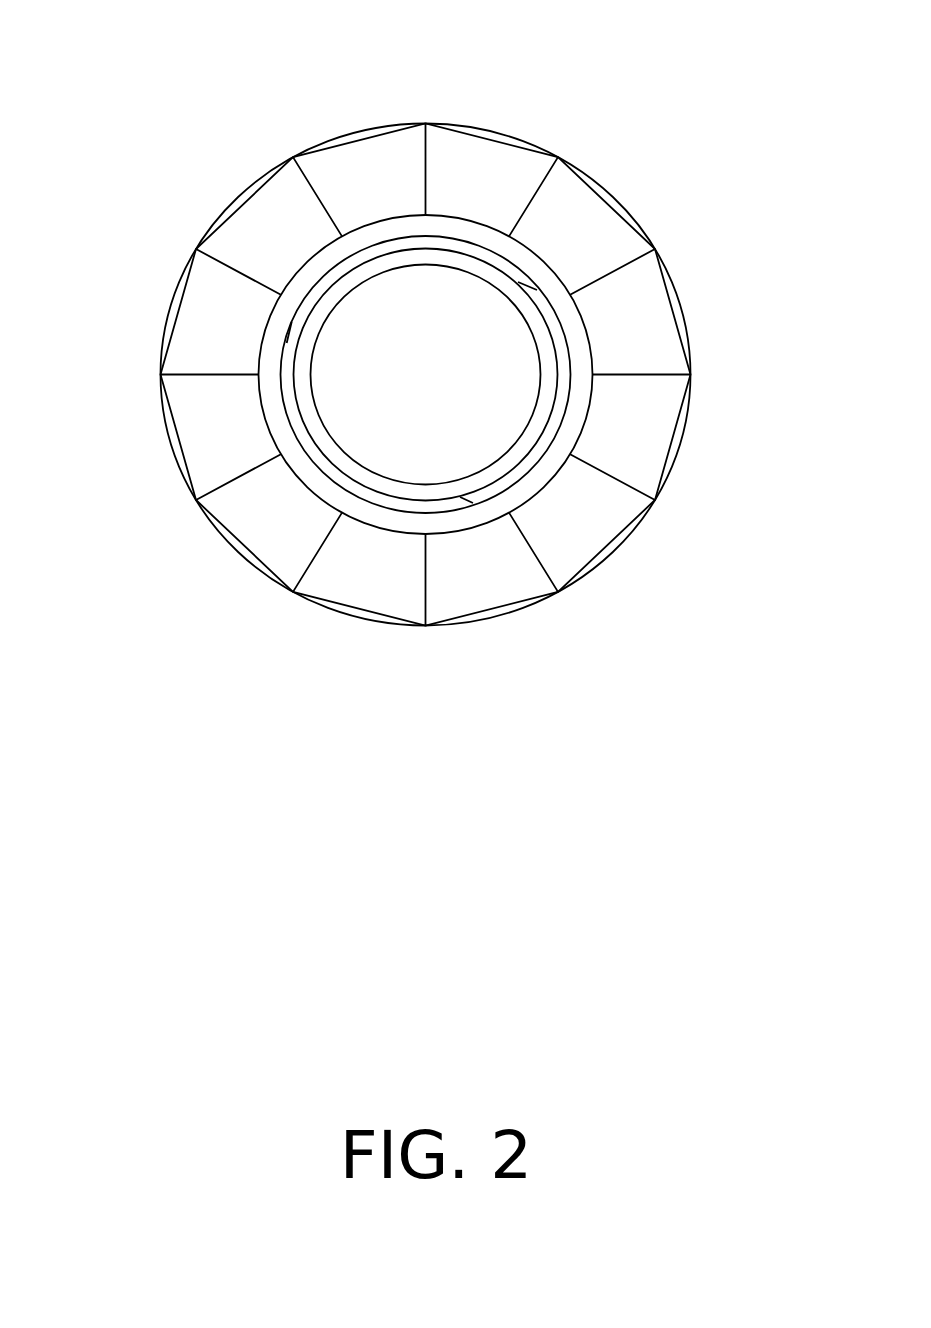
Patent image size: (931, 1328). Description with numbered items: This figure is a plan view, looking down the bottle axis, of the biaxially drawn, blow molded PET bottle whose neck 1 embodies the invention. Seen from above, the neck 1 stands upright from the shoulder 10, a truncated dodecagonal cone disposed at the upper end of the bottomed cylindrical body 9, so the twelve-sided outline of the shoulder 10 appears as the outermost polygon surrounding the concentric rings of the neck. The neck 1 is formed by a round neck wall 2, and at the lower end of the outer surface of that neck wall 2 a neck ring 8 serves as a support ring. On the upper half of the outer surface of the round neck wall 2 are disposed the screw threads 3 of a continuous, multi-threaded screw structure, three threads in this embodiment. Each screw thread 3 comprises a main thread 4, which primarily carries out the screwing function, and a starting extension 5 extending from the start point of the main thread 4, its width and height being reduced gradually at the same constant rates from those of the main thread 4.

The neck 1 is at (305, 497).
The round neck wall 2 is at (547, 343).
The screw thread 3 is at (451, 216).
The main thread 4 is at (343, 260).
The starting extension 5 is at (537, 290).
The neck ring 8 is at (478, 517).
The body 9 is at (378, 623).
The shoulder 10 is at (503, 177).